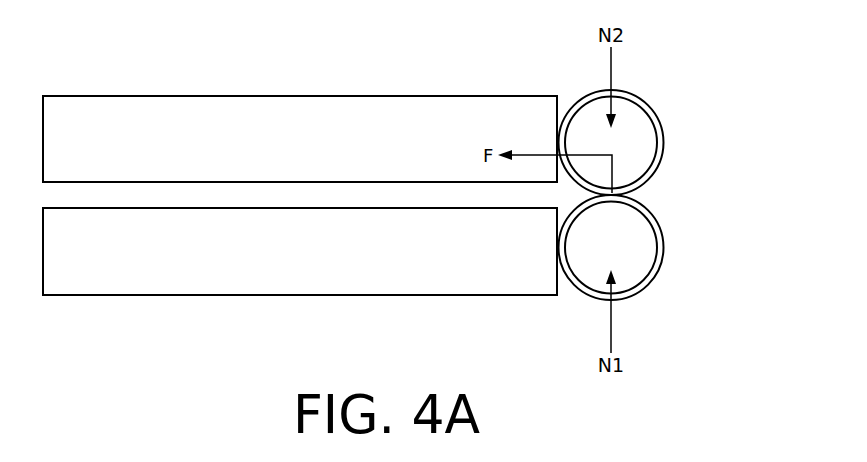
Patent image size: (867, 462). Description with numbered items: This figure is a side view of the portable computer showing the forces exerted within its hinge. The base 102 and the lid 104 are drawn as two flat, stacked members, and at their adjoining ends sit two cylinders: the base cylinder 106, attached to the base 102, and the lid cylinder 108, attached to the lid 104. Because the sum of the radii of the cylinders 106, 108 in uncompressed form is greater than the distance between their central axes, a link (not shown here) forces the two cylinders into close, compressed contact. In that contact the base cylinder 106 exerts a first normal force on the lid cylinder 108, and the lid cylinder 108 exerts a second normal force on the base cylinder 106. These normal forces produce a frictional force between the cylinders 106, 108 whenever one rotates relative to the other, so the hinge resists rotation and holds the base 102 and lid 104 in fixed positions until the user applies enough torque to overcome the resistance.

The base 102 is at (270, 264).
The lid 104 is at (273, 155).
The base cylinder 106 is at (662, 225).
The lid cylinder 108 is at (662, 120).